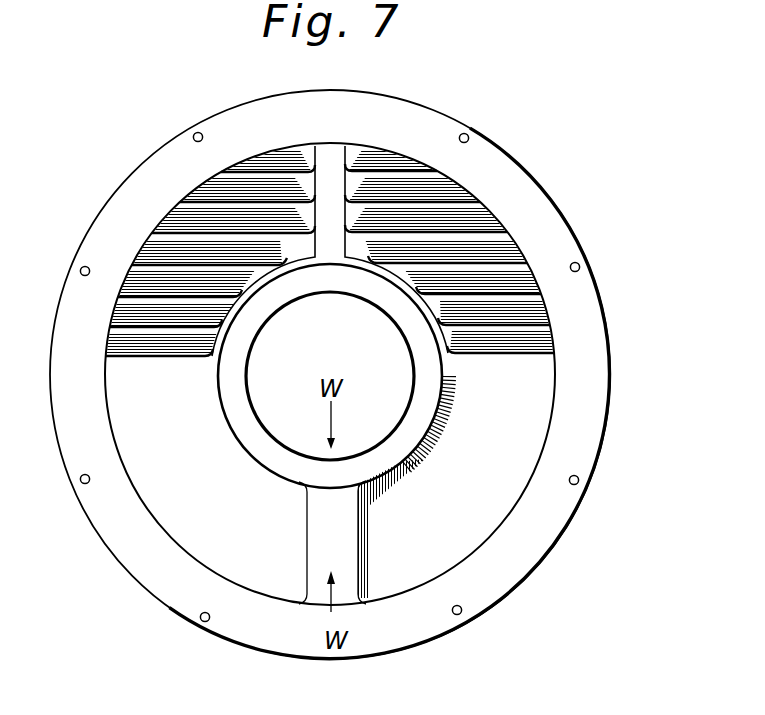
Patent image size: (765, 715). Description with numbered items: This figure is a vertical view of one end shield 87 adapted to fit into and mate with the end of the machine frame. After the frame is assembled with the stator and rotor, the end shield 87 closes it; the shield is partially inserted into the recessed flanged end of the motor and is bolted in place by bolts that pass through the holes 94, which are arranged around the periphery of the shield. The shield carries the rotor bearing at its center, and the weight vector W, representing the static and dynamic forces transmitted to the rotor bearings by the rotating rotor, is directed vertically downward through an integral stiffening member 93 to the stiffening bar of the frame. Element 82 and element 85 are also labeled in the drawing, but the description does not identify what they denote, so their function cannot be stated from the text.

The central hub 82 is at (273, 456).
The cooling fins 85 is at (158, 248).
The end shield 87 is at (672, 366).
The integral stiffening member 93 is at (345, 550).
The holes 94 is at (198, 132).